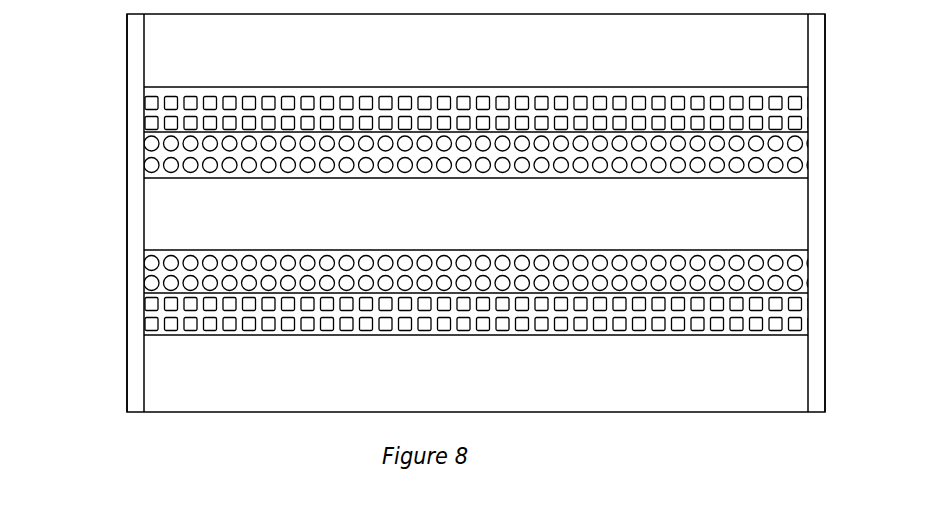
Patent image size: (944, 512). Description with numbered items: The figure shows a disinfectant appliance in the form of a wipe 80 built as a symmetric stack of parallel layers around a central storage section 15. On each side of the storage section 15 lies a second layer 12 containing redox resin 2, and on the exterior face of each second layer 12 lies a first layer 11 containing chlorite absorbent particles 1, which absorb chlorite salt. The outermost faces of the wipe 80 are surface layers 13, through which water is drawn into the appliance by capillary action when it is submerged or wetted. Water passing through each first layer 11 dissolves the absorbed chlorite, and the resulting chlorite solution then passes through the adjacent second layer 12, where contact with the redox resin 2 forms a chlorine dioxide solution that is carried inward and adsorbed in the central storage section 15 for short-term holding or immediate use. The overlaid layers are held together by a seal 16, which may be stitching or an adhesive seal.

The wipe 80 is at (100, 46).
The first layer 11 is at (145, 97).
The chlorite absorbent particles 1 is at (427, 121).
The storage section 15 is at (143, 189).
The seal 16 is at (127, 252).
The second layer 12 is at (145, 273).
The redox resin 2 is at (421, 289).
The surface layer 13 is at (160, 372).